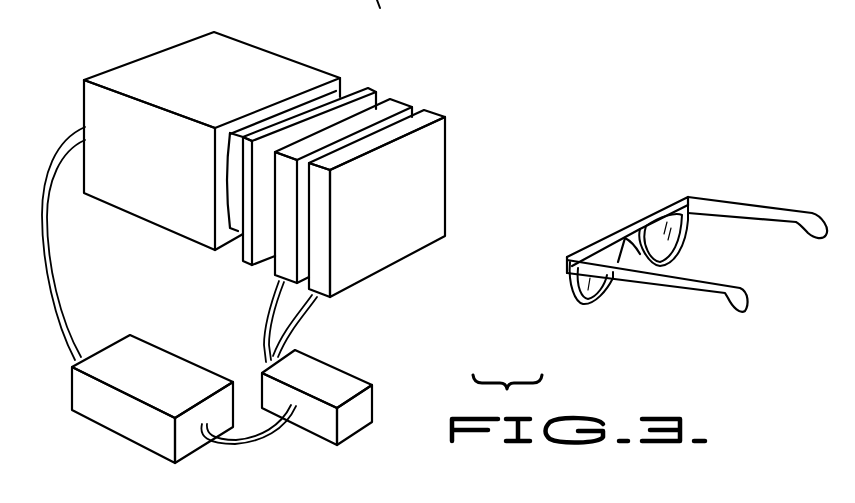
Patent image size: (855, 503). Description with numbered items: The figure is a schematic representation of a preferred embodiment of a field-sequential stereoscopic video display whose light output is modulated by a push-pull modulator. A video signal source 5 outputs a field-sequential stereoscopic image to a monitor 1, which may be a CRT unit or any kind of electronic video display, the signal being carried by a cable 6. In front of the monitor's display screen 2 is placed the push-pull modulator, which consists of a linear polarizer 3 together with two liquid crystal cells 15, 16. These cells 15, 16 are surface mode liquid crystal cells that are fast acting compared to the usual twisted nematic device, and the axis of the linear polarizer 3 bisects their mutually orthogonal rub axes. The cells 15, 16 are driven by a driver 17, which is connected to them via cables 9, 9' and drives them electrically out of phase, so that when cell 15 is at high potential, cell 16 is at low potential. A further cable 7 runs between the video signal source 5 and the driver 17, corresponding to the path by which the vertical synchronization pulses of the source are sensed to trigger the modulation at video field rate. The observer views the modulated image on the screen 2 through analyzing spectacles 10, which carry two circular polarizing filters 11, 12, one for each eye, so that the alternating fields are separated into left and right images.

The monitor 1 is at (280, 54).
The display screen 2 is at (309, 98).
The linear polarizer 3 is at (367, 88).
The video signal source 5 is at (137, 340).
The cable 6 is at (56, 268).
The cable 7 is at (256, 447).
The cable 9 is at (259, 321).
The cable 9' is at (306, 326).
The analyzing spectacles 10 is at (713, 198).
The circular polarizing filter 11 is at (608, 247).
The circular polarizing filter 12 is at (673, 213).
The liquid crystal cell 15 is at (407, 103).
The liquid crystal cell 16 is at (444, 113).
The driver 17 is at (350, 373).